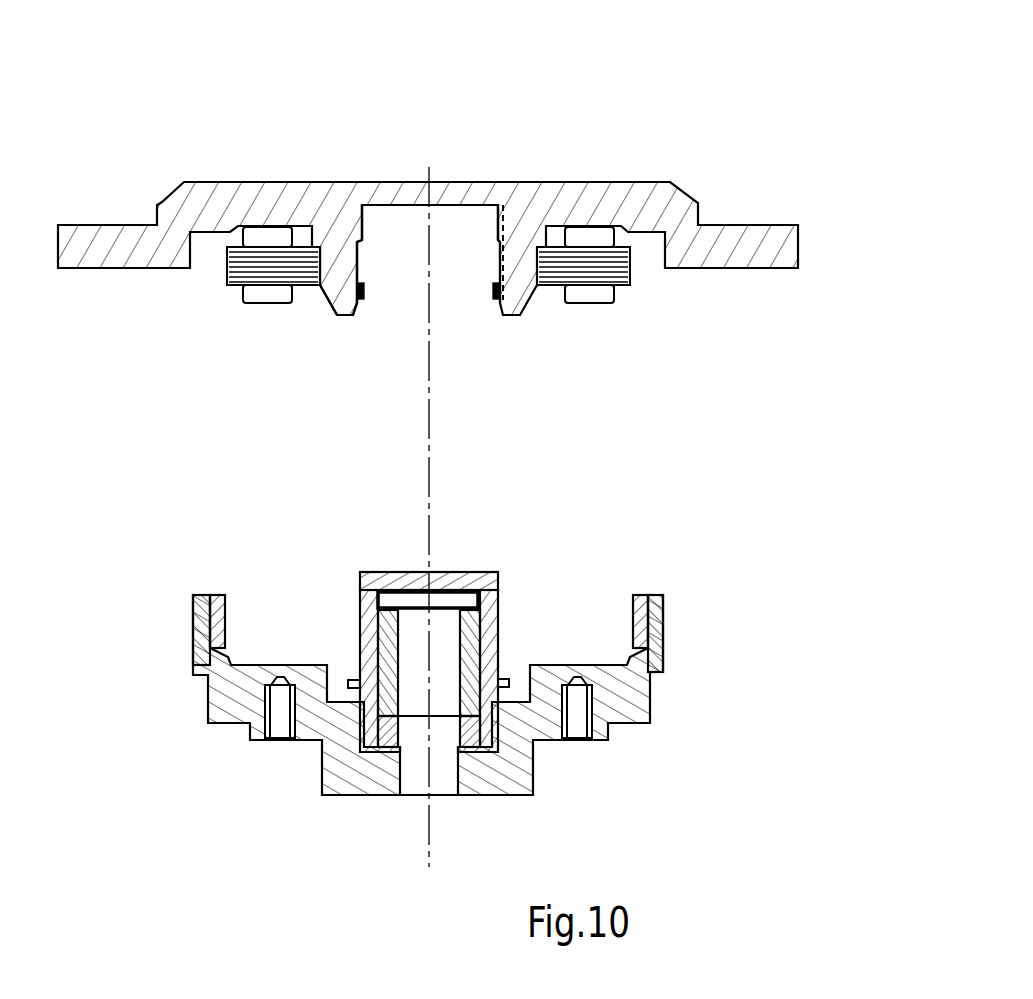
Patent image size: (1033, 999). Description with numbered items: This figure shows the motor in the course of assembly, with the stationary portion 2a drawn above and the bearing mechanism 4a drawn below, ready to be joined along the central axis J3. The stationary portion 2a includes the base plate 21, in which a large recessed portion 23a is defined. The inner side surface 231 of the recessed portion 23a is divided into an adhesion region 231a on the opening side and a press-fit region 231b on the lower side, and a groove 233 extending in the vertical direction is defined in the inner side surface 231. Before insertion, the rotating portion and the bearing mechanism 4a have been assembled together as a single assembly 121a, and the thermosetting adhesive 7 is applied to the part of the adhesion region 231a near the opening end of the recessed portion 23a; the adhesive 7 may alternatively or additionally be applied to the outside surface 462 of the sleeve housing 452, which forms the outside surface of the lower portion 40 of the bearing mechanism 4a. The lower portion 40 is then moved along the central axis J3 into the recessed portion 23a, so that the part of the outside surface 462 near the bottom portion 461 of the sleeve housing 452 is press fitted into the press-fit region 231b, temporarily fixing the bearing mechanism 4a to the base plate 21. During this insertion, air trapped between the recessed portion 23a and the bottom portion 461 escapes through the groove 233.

The stationary portion 2a is at (677, 132).
The base plate 21 is at (556, 183).
The inner side surface 231 is at (440, 43).
The adhesion region 231a is at (362, 270).
The press-fit region 231b is at (363, 228).
The groove 233 is at (495, 257).
The recessed portion 23a is at (372, 327).
The thermosetting adhesive 7 is at (497, 296).
The central axis J3 is at (430, 455).
The bearing mechanism 4a is at (348, 538).
The lower portion 40 is at (350, 594).
The sleeve housing 452 is at (708, 547).
The bottom portion 461 is at (448, 578).
The outside surface 462 is at (503, 602).
The assembly 121a is at (338, 817).